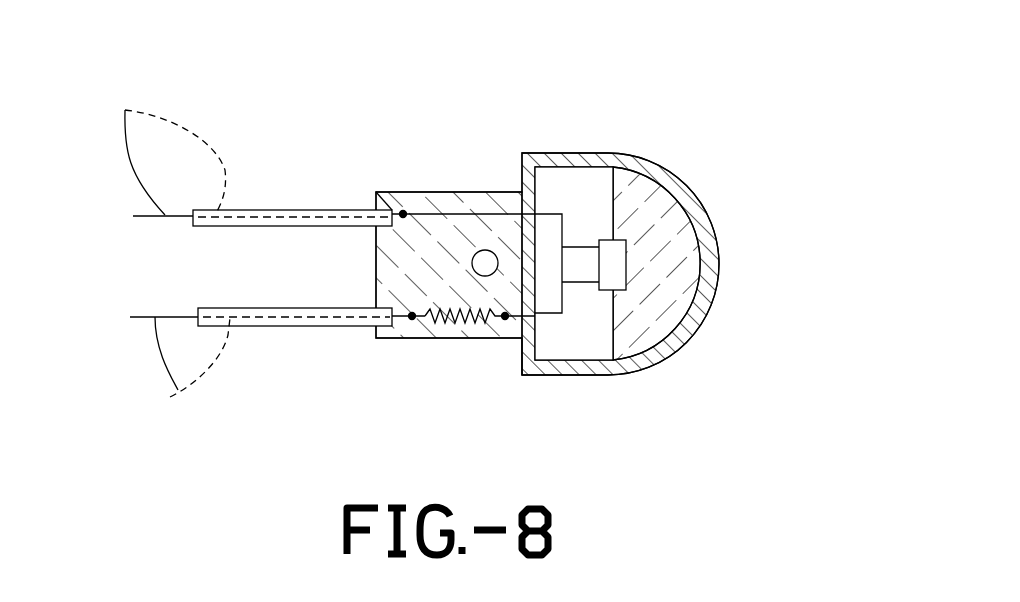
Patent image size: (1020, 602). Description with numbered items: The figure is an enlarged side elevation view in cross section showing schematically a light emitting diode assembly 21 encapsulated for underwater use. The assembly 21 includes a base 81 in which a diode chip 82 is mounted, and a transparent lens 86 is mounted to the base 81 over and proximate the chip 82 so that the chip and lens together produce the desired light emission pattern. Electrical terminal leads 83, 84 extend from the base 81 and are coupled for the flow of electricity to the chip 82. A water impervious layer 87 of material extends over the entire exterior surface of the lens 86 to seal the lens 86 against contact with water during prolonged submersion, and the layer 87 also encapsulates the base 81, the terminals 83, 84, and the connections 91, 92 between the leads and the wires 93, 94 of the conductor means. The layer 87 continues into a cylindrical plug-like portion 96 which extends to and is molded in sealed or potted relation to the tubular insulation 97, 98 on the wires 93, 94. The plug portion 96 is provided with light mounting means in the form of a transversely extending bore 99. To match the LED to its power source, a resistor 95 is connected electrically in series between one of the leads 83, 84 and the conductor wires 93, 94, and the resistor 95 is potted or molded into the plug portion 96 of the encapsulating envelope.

The light emitting diode assembly 21 is at (553, 147).
The base 81 is at (587, 332).
The diode chip 82 is at (615, 250).
The electrical terminal lead 83 is at (455, 212).
The electrical terminal lead 84 is at (517, 342).
The transparent lens 86 is at (660, 294).
The water impervious layer 87 is at (603, 160).
The connection 91 is at (377, 192).
The connection 92 is at (412, 318).
The wire 93 is at (125, 110).
The wire 94 is at (178, 390).
The resistor 95 is at (455, 320).
The cylindrical plug-like portion 96 is at (403, 212).
The tubular insulation 97 is at (236, 227).
The tubular insulation 98 is at (263, 327).
The transversely extending bore 99 is at (477, 273).